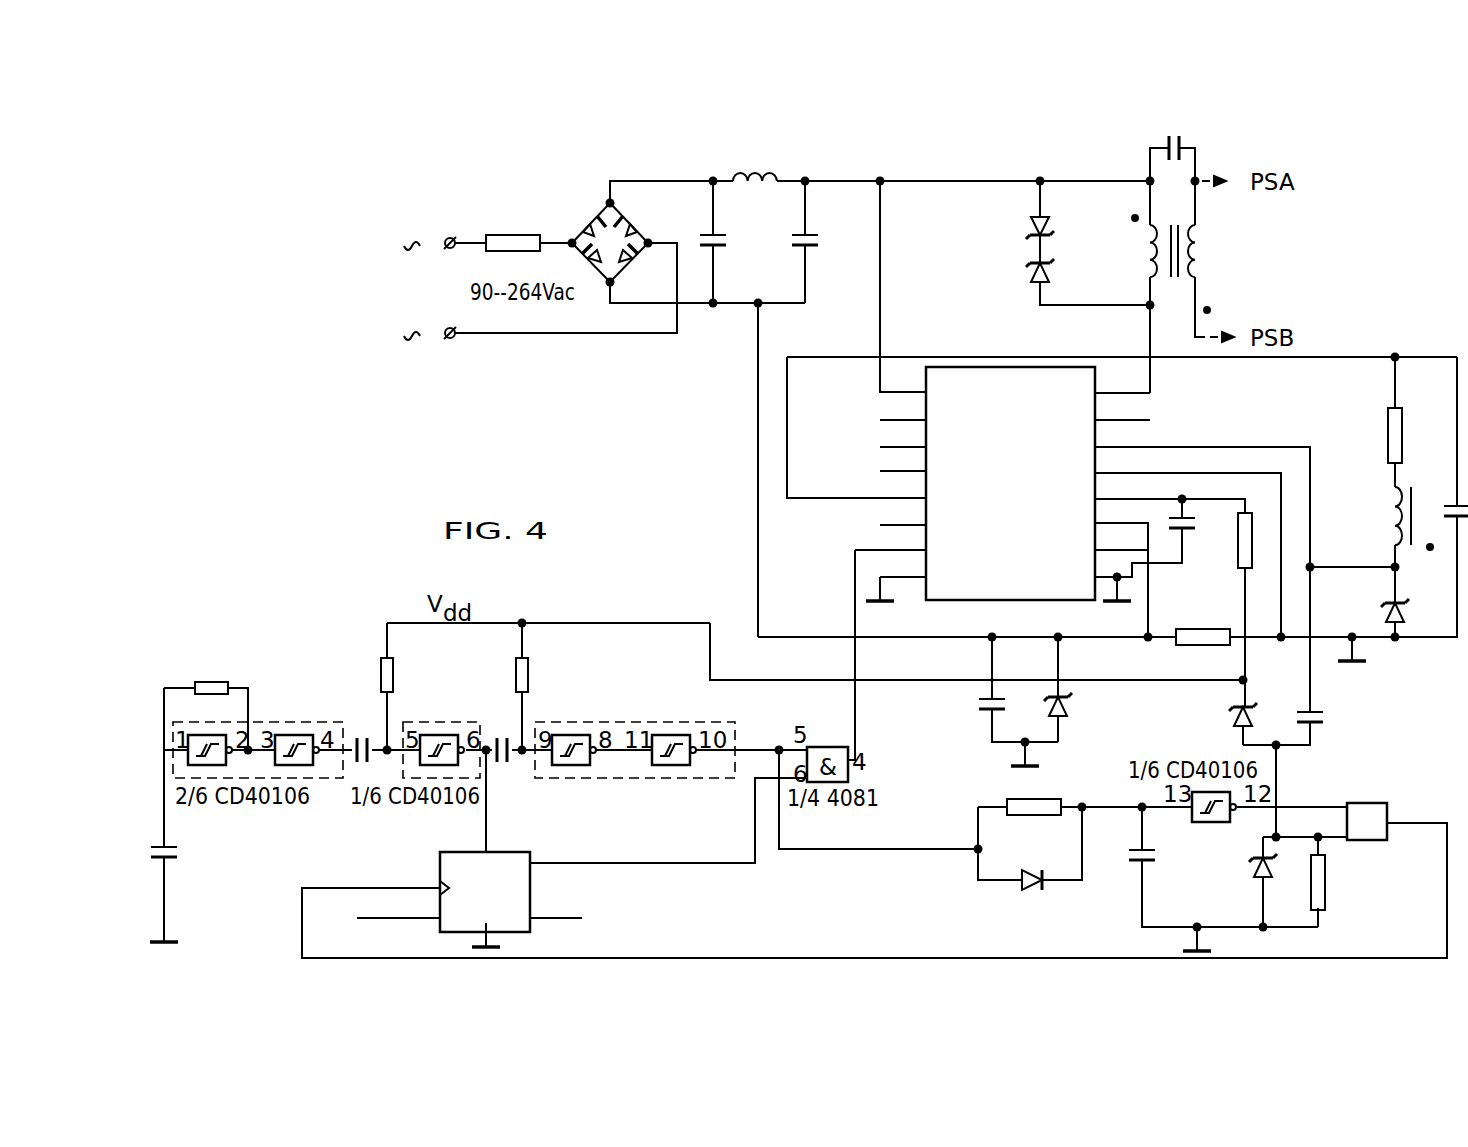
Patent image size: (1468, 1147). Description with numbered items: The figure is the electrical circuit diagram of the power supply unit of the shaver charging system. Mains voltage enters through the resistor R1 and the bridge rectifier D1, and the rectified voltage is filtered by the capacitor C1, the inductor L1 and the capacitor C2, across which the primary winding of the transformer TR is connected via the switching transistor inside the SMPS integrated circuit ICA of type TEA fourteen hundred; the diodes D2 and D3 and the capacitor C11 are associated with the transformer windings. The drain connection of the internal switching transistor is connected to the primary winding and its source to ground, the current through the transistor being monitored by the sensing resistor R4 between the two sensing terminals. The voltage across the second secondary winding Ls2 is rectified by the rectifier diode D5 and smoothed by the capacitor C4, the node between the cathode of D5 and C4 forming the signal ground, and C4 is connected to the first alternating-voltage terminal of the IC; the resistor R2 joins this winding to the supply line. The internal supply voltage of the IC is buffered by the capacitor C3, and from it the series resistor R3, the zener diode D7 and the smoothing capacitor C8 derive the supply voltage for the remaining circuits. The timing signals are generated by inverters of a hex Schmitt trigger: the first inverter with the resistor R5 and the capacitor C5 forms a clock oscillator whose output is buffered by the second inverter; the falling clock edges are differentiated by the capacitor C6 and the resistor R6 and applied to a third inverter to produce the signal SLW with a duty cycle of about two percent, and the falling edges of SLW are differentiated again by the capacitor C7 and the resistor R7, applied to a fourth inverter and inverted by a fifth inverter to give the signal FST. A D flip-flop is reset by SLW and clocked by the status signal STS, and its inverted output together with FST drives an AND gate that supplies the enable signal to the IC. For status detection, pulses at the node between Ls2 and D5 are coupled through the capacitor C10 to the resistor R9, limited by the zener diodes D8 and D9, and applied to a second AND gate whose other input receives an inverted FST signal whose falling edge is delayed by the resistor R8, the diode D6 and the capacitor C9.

The resistor R1 is at (513, 236).
The bridge rectifier D1 is at (610, 242).
The inductor L1 is at (760, 175).
The capacitor C1 is at (727, 237).
The capacitor C2 is at (819, 237).
The diode D2 is at (1032, 225).
The diode D3 is at (1032, 275).
The capacitor C11 is at (1183, 145).
The transformer TR is at (1176, 280).
The SMPS integrated circuit ICA is at (940, 600).
The resistor R2 is at (1388, 420).
The second secondary winding Ls2 is at (1392, 516).
The rectifier diode D5 is at (1384, 612).
The smoothing capacitor C4 is at (1450, 502).
The capacitor C3 is at (1196, 528).
The series resistor R3 is at (1238, 568).
The sensing resistor R4 is at (1213, 645).
The smoothing capacitor C8 is at (978, 699).
The zener diode D7 is at (1068, 708).
The zener diode D8 is at (1232, 718).
The capacitor C10 is at (1324, 712).
The resistor R8 is at (1003, 797).
The diode D6 is at (1030, 892).
The capacitor C9 is at (1156, 860).
The zener diode D9 is at (1252, 872).
The resistor R9 is at (1326, 892).
The resistor R5 is at (213, 682).
The capacitor C5 is at (172, 862).
The capacitor C6 is at (352, 735).
The capacitor C7 is at (492, 735).
The resistor R6 is at (393, 668).
The resistor R7 is at (528, 668).
The fast signal FST is at (658, 753).
The slow signal SLW is at (476, 890).
The status signal STS is at (1398, 798).